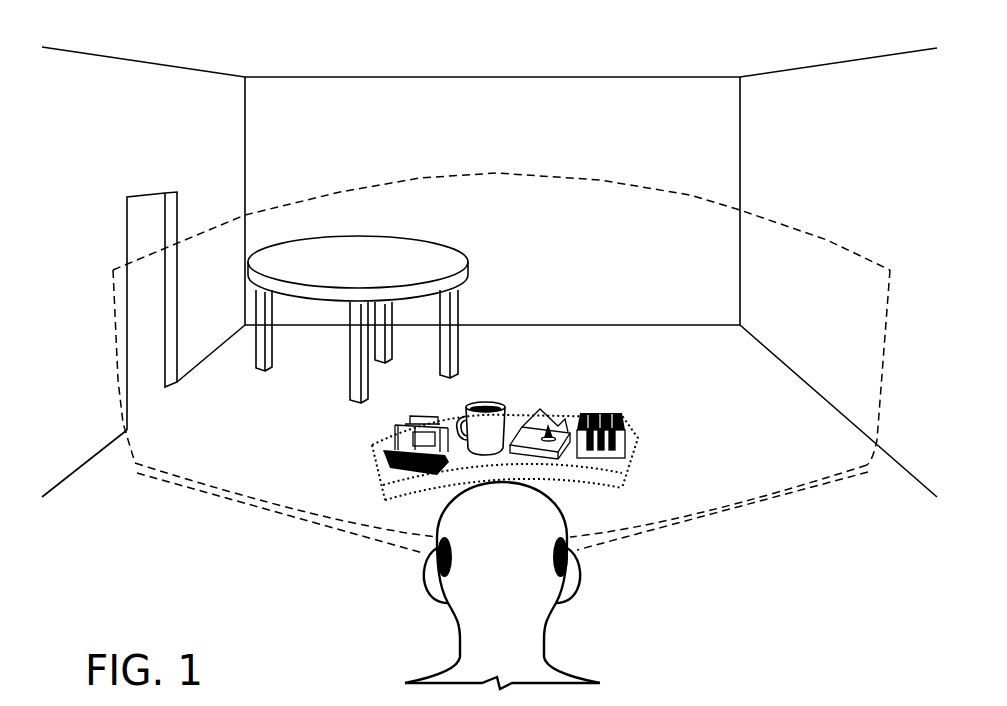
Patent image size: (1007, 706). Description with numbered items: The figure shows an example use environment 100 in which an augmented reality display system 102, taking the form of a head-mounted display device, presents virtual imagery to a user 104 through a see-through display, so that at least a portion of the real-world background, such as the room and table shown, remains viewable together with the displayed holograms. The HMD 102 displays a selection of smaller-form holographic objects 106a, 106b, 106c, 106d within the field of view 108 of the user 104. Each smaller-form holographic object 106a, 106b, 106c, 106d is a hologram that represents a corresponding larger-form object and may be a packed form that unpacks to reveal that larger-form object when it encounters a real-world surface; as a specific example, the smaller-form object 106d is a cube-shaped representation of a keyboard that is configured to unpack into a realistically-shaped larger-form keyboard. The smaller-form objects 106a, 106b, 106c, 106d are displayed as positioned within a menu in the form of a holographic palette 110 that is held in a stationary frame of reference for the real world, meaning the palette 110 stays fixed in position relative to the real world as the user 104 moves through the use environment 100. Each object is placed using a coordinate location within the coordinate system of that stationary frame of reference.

The use environment 100 is at (683, 56).
The augmented reality display system 102 is at (568, 547).
The user 104 is at (522, 665).
The smaller-form holographic object 106a is at (392, 432).
The smaller-form holographic object 106b is at (486, 404).
The smaller-form holographic object 106c is at (542, 395).
The smaller-form holographic object 106d is at (605, 412).
The field of view 108 is at (613, 182).
The holographic palette 110 is at (638, 462).